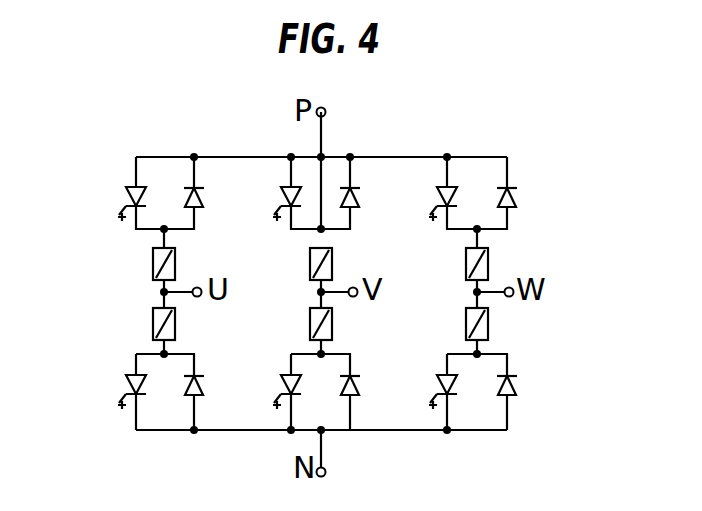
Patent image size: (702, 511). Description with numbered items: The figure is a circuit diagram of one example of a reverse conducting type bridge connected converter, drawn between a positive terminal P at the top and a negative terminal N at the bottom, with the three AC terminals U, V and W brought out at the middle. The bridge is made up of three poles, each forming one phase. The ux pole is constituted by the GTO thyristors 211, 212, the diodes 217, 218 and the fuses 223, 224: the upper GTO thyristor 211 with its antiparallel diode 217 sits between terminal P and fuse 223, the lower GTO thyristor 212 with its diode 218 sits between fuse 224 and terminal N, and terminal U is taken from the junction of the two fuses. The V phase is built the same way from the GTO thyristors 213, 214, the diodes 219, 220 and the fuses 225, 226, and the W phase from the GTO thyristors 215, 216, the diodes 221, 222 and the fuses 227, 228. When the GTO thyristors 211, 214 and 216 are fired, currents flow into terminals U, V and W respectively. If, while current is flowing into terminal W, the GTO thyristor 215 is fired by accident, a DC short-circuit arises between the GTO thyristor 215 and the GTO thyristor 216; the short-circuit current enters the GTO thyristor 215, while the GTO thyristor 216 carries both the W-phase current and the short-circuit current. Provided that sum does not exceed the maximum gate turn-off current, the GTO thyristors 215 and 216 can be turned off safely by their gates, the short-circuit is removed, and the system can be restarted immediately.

The GTO thyristor 211 is at (127, 191).
The GTO thyristor 212 is at (127, 379).
The GTO thyristor 213 is at (283, 191).
The GTO thyristor 214 is at (283, 379).
The GTO thyristor 215 is at (439, 191).
The GTO thyristor 216 is at (439, 379).
The diode 217 is at (205, 203).
The diode 218 is at (235, 380).
The diode 219 is at (360, 204).
The diode 220 is at (360, 392).
The diode 221 is at (517, 203).
The diode 222 is at (517, 392).
The fuse 223 is at (153, 257).
The fuse 224 is at (153, 317).
The fuse 225 is at (310, 257).
The fuse 226 is at (310, 317).
The fuse 227 is at (466, 257).
The fuse 228 is at (466, 317).